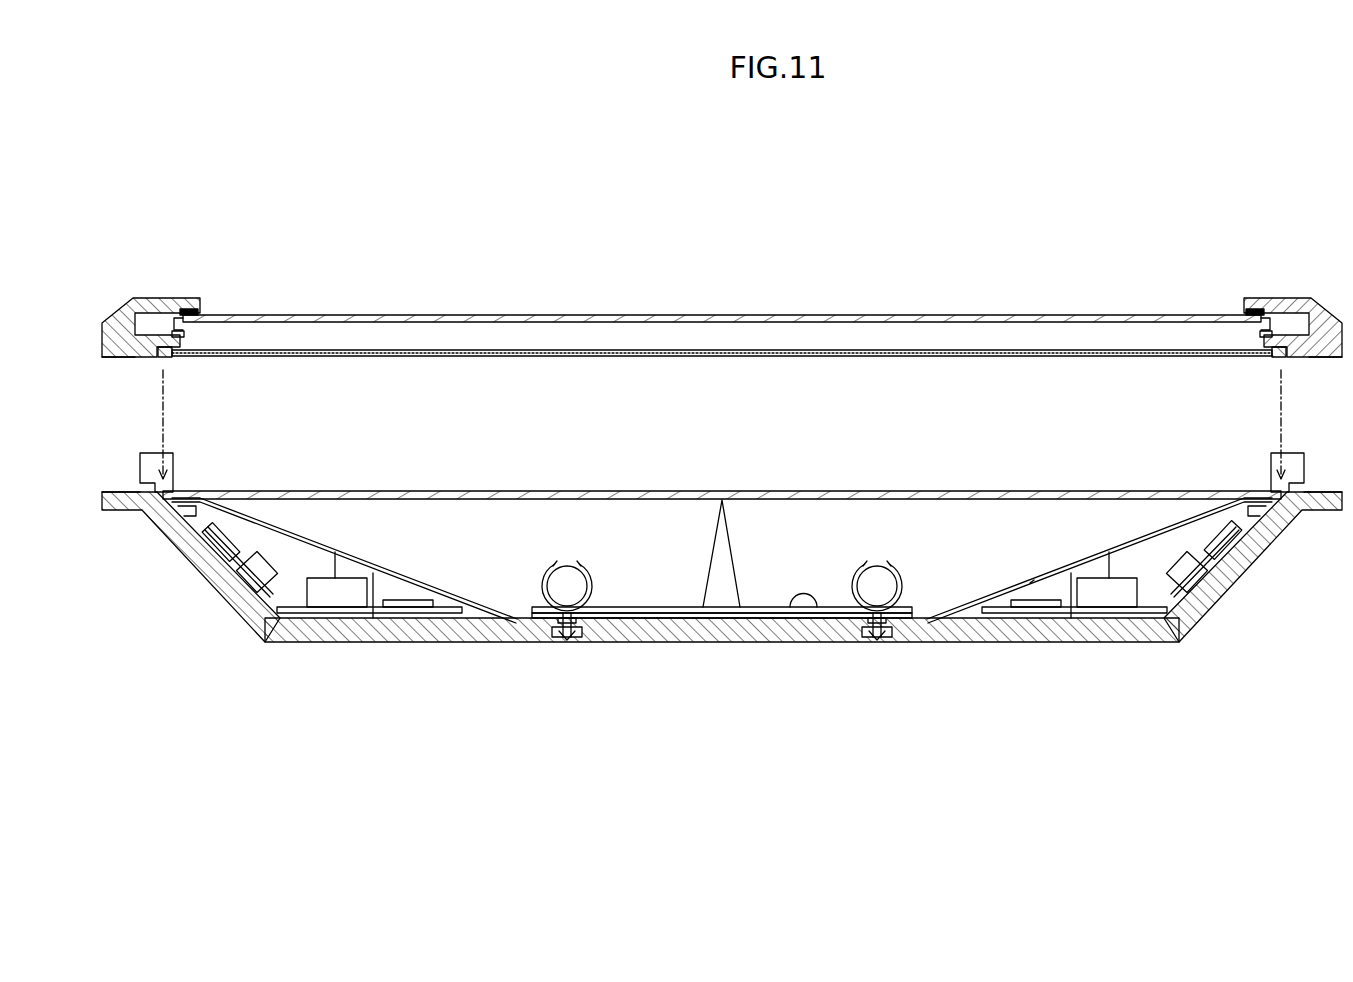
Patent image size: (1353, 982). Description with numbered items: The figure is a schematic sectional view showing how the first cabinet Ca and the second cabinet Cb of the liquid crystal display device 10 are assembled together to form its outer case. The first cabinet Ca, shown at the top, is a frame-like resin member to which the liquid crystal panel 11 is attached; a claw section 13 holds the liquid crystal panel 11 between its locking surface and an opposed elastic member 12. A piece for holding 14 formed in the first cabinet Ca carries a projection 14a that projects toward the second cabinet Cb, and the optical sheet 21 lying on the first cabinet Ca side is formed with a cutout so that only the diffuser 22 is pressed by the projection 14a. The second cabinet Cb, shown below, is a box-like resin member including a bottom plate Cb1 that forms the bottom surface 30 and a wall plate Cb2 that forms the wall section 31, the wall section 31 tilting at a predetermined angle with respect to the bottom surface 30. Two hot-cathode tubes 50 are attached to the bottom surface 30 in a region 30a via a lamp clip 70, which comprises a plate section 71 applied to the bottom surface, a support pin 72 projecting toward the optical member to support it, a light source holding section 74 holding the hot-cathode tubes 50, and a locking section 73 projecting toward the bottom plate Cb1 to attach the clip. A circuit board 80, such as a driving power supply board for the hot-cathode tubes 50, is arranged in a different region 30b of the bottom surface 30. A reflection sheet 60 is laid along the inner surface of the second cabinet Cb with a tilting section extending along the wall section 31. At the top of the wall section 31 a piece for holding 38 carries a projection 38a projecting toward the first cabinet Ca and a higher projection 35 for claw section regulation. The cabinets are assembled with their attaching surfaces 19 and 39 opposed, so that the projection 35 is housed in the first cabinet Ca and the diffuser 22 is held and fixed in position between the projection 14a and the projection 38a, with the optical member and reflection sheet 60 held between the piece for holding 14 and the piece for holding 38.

The liquid crystal display device 10 is at (805, 248).
The liquid crystal panel 11 is at (568, 315).
The elastic member 12 is at (188, 309).
The claw section 13 is at (186, 327).
The piece for holding 14 is at (184, 338).
The projection 14a is at (163, 343).
The attaching surface 19 is at (118, 357).
The optical sheet 21 is at (897, 350).
The diffuser 22 is at (928, 491).
The bottom surface 30 is at (722, 649).
The region 30a is at (803, 600).
The region 30b is at (393, 610).
The wall section 31 is at (227, 577).
The projection 35 is at (151, 458).
The piece for holding 38 is at (215, 503).
The projection 38a is at (170, 491).
The attaching surface 39 is at (127, 492).
The hot-cathode tube 50 is at (578, 587).
The reflection sheet 60 is at (1032, 584).
The lamp clip 70 is at (722, 668).
The plate section 71 is at (637, 616).
The support pin 72 is at (727, 565).
The locking section 73 is at (567, 640).
The light source holding section 74 is at (588, 577).
The circuit board 80 is at (238, 565).
The first cabinet Ca is at (1318, 315).
The second cabinet Cb is at (723, 584).
The bottom plate Cb1 is at (713, 633).
The wall plate Cb2 is at (192, 553).